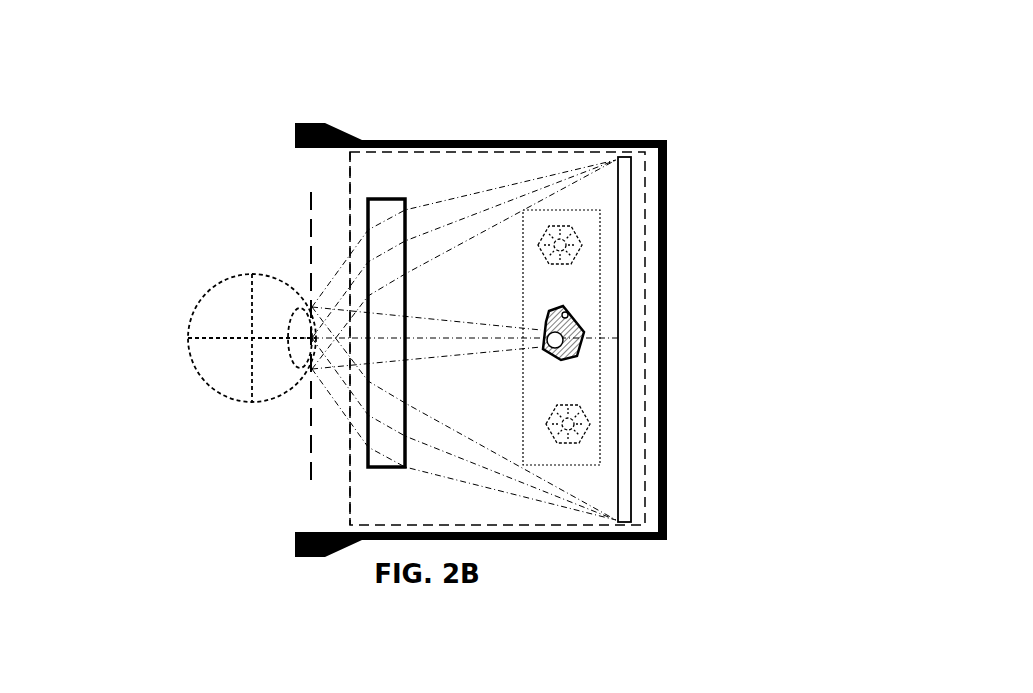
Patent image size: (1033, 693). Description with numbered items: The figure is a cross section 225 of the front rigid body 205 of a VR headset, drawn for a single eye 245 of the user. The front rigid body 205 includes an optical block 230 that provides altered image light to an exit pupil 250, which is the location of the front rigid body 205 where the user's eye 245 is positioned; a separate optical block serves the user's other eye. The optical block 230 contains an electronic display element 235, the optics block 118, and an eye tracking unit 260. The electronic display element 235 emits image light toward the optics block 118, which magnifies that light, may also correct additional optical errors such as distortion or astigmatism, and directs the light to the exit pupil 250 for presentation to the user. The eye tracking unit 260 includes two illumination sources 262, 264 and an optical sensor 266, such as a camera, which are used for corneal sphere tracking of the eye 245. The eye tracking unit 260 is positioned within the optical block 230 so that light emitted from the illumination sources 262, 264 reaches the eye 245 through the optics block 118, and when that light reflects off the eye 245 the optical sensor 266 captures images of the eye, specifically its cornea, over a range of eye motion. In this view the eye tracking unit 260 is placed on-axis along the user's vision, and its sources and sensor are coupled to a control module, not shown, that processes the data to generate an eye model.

The cross section 225 is at (90, 33).
The optics block 118 is at (367, 211).
The front rigid body 205 is at (639, 137).
The optical block 230 is at (348, 447).
The electronic display element 235 is at (633, 257).
The eye 245 is at (222, 284).
The exit pupil 250 is at (302, 463).
The eye tracking unit 260 is at (677, 338).
The illumination source 262 is at (560, 257).
The illumination source 264 is at (568, 435).
The optical sensor 266 is at (563, 348).